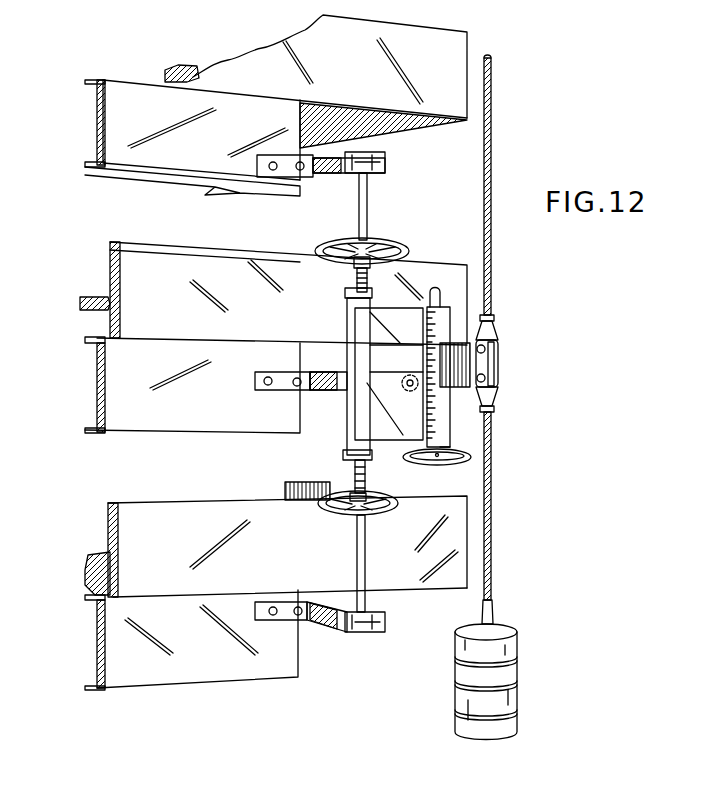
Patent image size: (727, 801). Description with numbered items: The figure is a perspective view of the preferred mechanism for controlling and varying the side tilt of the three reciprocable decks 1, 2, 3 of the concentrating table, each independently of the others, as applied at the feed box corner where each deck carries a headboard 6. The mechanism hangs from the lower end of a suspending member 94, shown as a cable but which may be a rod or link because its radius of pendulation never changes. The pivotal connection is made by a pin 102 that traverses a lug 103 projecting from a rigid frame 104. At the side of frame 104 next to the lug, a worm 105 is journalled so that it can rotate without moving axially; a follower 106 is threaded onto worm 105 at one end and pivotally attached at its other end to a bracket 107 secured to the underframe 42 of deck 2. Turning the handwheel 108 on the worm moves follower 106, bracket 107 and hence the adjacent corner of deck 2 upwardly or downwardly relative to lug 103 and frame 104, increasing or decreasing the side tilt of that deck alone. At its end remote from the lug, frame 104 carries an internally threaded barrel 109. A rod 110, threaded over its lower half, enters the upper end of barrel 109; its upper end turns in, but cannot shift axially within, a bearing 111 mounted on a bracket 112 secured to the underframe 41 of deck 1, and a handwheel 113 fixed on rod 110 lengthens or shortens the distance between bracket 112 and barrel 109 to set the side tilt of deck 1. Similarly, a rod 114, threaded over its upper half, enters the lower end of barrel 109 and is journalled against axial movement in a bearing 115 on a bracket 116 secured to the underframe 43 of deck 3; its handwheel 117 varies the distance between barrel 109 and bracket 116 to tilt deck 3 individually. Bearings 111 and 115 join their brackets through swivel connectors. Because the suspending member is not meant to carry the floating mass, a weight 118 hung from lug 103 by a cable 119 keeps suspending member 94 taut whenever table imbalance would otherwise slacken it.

The deck 1 is at (181, 66).
The deck 2 is at (87, 296).
The deck 3 is at (92, 550).
The headboard 6 is at (239, 57).
The underframe 41 is at (192, 165).
The underframe 42 is at (138, 425).
The underframe 43 is at (138, 675).
The suspending member 94 is at (491, 112).
The pin 102 is at (498, 351).
The lug 103 is at (498, 368).
The rigid frame 104 is at (428, 305).
The worm 105 is at (440, 420).
The follower 106 is at (412, 377).
The bracket 107 is at (318, 372).
The handwheel 108 is at (437, 465).
The internally threaded barrel 109 is at (347, 320).
The rod 110 is at (367, 228).
The bearing 111 is at (385, 157).
The bracket 112 is at (328, 162).
The handwheel 113 is at (400, 250).
The rod 114 is at (365, 565).
The bearing 115 is at (385, 623).
The bracket 116 is at (338, 630).
The handwheel 117 is at (330, 511).
The weight 118 is at (517, 651).
The cable 119 is at (491, 521).